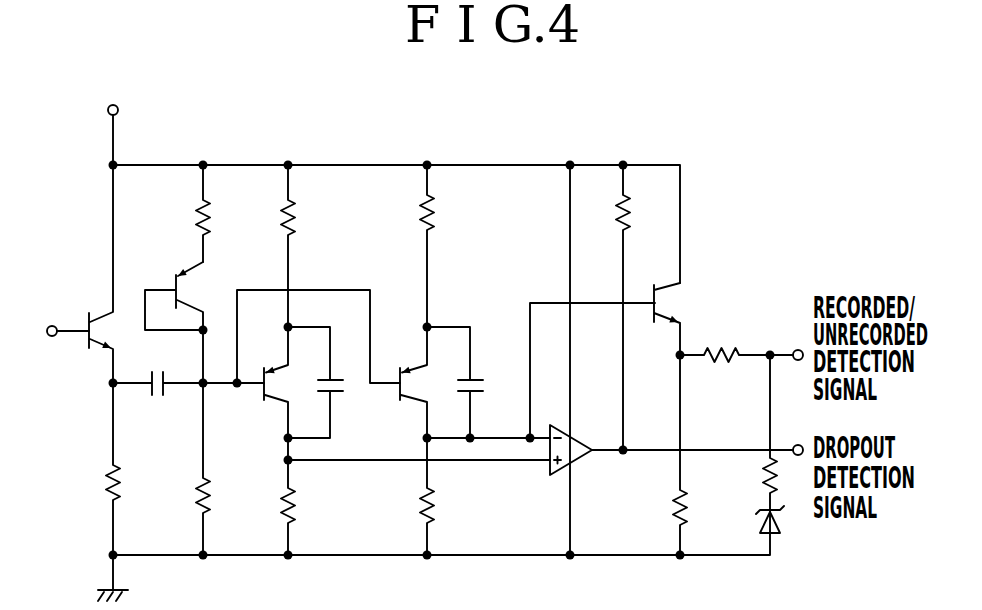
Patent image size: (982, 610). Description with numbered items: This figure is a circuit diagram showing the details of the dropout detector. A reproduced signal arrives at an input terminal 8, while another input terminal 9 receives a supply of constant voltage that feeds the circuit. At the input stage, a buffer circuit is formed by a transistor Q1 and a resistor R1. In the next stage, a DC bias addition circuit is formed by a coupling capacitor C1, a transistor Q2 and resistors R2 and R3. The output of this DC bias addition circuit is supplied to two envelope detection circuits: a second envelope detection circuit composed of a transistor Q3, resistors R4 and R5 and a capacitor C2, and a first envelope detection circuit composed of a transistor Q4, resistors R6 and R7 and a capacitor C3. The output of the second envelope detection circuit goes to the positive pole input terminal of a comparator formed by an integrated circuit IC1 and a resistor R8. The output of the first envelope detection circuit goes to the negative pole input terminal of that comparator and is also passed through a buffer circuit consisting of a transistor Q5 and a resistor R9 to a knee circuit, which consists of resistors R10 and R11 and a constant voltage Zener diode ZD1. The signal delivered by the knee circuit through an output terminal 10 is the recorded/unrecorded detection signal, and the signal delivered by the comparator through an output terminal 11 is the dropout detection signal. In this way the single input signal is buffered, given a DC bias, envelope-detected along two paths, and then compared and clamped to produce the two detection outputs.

The input terminal 8 is at (52, 326).
The input terminal 9 is at (118, 110).
The output terminal 10 is at (796, 350).
The output terminal 11 is at (796, 445).
The transistor Q1 is at (113, 274).
The transistor Q2 is at (183, 322).
The transistor Q3 is at (288, 382).
The transistor Q4 is at (425, 382).
The transistor Q5 is at (679, 319).
The resistor R1 is at (125, 469).
The resistor R2 is at (190, 213).
The resistor R3 is at (191, 469).
The resistor R4 is at (275, 246).
The resistor R5 is at (276, 496).
The resistor R6 is at (413, 246).
The resistor R7 is at (414, 496).
The resistor R8 is at (610, 307).
The resistor R9 is at (668, 455).
The resistor R10 is at (725, 372).
The resistor R11 is at (756, 432).
The coupling capacitor C1 is at (158, 402).
The capacitor C2 is at (322, 382).
The capacitor C3 is at (462, 382).
The integrated circuit IC1 is at (540, 360).
The constant voltage Zener diode ZD1 is at (753, 524).